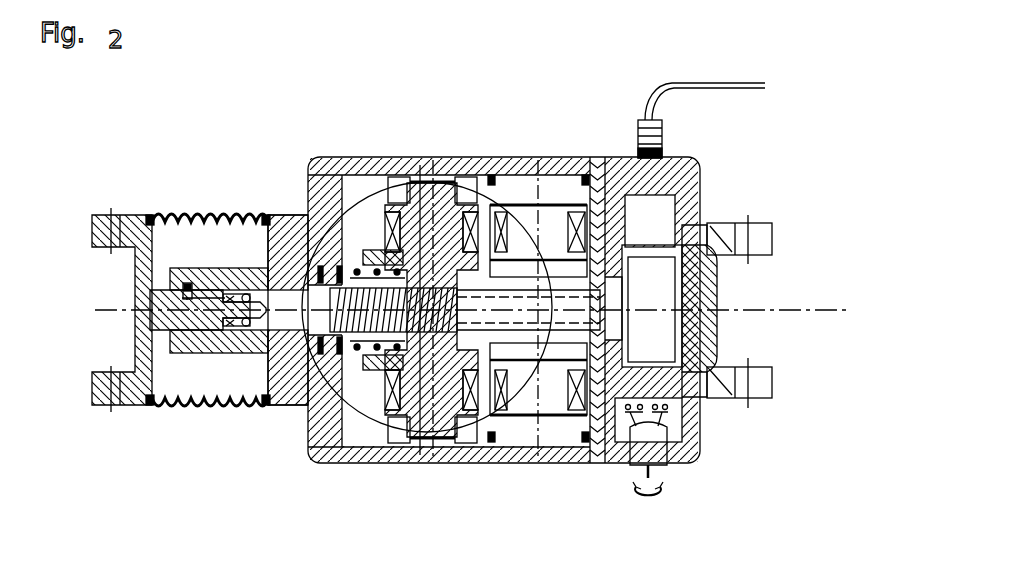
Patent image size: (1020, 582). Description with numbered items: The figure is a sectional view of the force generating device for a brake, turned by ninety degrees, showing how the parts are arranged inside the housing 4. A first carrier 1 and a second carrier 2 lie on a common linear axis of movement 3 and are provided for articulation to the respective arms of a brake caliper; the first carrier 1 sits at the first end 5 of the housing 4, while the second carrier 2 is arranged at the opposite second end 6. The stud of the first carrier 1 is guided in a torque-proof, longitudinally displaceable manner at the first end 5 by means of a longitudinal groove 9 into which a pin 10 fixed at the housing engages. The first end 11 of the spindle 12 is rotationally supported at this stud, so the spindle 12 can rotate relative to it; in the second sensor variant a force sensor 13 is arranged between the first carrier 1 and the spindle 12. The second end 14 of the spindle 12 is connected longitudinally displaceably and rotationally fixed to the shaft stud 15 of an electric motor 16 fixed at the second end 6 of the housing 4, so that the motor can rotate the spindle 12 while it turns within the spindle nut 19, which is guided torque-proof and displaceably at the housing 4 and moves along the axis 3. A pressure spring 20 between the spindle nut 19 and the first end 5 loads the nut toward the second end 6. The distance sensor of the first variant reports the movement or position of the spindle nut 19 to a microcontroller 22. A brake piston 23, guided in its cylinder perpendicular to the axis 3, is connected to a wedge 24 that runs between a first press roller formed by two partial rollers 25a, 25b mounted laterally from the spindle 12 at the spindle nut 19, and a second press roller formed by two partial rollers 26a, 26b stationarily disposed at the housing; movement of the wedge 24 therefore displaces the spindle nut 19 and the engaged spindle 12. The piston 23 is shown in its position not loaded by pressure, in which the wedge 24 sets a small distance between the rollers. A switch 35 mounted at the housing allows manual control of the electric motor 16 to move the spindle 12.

The first carrier 1 is at (148, 362).
The second carrier 2 is at (725, 380).
The linear axis of movement 3 is at (815, 308).
The housing 4 is at (302, 388).
The first end 5 is at (258, 203).
The second end 6 is at (773, 203).
The longitudinal groove 9 is at (208, 297).
The pin 10 is at (186, 283).
The first end of the spindle 11 is at (256, 332).
The spindle 12 is at (343, 250).
The force sensor 13 is at (238, 327).
The second end of the spindle 14 is at (603, 420).
The shaft stud 15 is at (612, 297).
The electric motor 16 is at (652, 306).
The spindle nut 19 is at (408, 432).
The pressure spring 20 is at (352, 343).
The microcontroller 22 is at (655, 210).
The piston 23 is at (365, 190).
The wedge 24 is at (485, 212).
The first partial roller 25a is at (458, 187).
The first partial roller 25b is at (452, 430).
The second partial roller 26a is at (503, 197).
The second partial roller 26b is at (502, 420).
The switch 35 is at (663, 428).